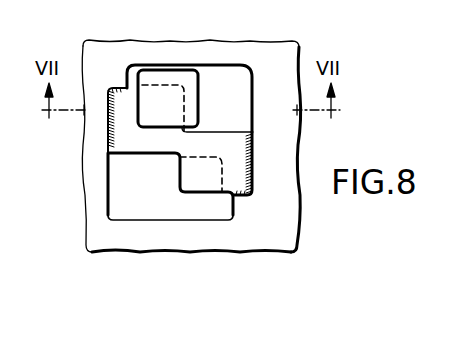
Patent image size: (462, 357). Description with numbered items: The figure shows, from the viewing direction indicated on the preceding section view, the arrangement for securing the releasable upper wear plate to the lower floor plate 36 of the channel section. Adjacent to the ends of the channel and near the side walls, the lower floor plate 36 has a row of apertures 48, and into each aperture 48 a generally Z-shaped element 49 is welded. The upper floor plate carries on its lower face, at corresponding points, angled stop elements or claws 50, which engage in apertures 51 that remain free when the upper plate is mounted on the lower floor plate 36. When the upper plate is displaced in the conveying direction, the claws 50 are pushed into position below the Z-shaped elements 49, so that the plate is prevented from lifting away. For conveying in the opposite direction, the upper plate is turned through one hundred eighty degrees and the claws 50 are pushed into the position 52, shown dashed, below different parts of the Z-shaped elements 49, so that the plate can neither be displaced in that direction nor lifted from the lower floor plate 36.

The lower floor plate 36 is at (100, 239).
The aperture 48 is at (147, 206).
The Z-shaped element 49 is at (238, 152).
The angled stop element (claw) 50 is at (190, 93).
The aperture 51 is at (220, 75).
The position 52 is at (207, 186).